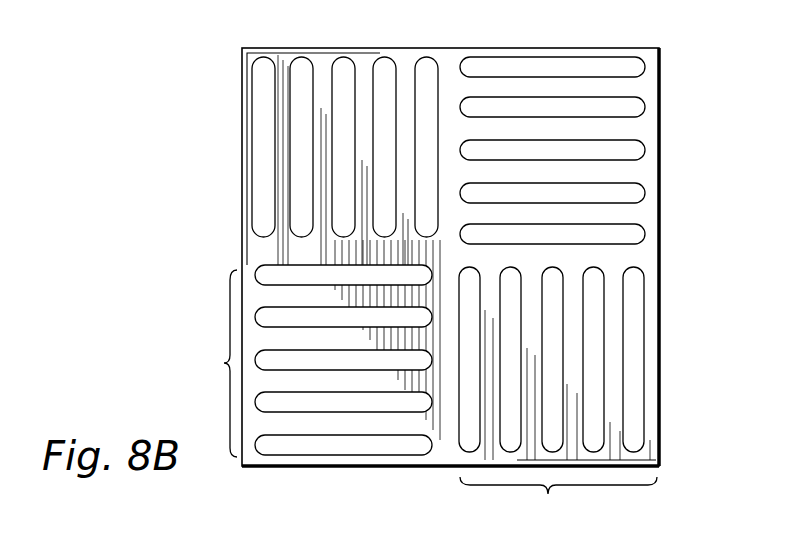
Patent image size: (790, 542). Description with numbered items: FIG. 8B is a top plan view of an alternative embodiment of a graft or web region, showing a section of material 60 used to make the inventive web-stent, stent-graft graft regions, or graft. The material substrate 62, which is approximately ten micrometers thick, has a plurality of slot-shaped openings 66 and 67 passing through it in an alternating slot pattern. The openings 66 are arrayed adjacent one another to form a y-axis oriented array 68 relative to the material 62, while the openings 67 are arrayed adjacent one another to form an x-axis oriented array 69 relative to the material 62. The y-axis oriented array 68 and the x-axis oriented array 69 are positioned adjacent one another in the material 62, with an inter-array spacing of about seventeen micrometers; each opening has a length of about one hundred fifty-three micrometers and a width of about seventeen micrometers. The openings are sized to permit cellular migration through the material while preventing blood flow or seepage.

The material 60 is at (663, 36).
The material substrate 62 is at (700, 96).
The openings 66 is at (593, 108).
The openings 67 is at (432, 66).
The y-axis oriented array 68 is at (224, 364).
The x-axis oriented array 69 is at (558, 502).